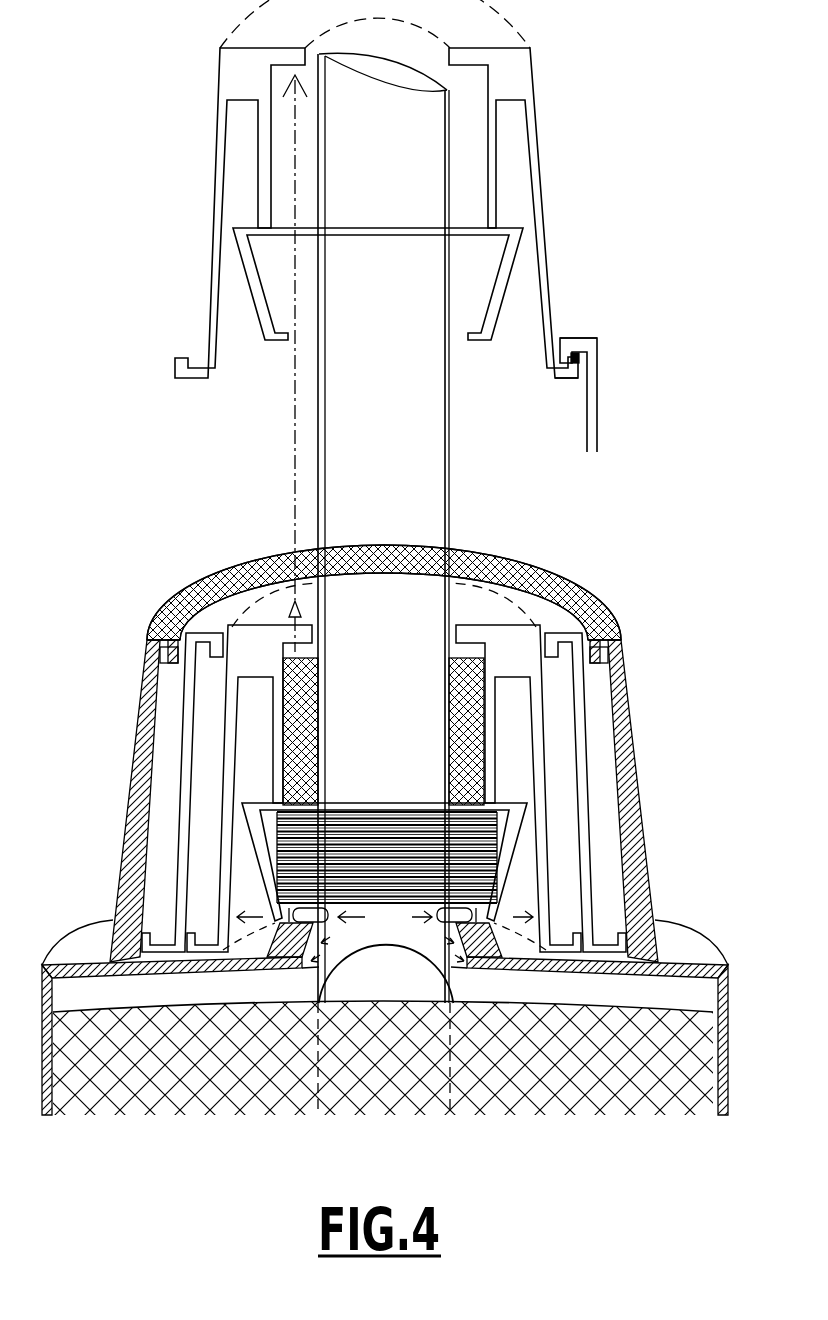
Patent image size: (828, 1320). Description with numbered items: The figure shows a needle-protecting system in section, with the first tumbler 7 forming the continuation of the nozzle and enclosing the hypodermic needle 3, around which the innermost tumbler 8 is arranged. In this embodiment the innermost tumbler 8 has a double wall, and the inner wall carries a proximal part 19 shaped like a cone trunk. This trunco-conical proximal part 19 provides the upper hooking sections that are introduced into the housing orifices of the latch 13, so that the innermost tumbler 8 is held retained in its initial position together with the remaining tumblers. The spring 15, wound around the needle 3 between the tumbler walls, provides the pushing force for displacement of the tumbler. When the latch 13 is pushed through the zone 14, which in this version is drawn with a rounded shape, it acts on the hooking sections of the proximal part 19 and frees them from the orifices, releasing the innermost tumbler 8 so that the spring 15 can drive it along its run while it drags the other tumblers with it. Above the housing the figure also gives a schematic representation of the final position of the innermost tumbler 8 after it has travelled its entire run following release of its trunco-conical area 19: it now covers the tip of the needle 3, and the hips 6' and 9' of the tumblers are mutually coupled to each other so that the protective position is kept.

The needle 3 is at (365, 445).
The first tumbler 7 is at (137, 748).
The innermost tumbler 8 is at (538, 183).
The hip 9' is at (605, 319).
The hip 6' is at (550, 413).
The proximal part 19 is at (502, 293).
The spring 15 is at (497, 830).
The latch 13 is at (447, 917).
The zone 14 is at (353, 983).